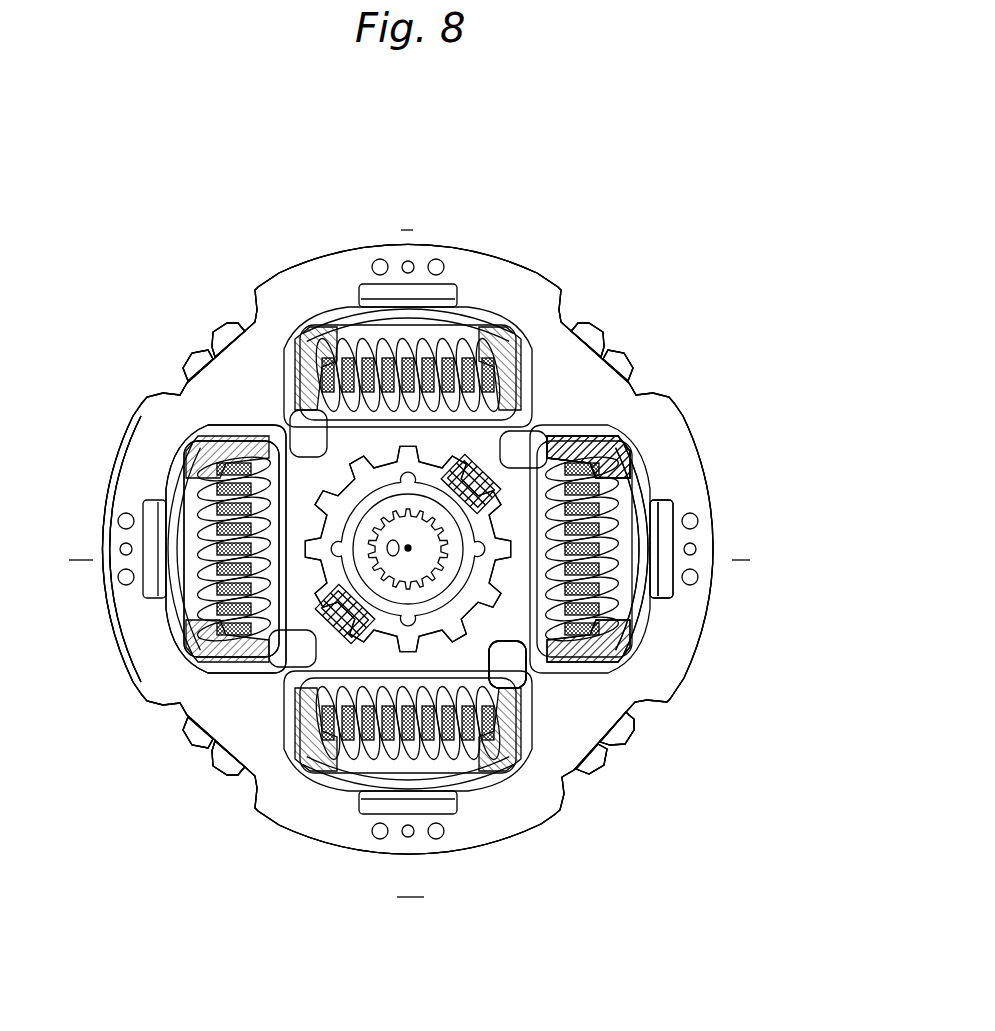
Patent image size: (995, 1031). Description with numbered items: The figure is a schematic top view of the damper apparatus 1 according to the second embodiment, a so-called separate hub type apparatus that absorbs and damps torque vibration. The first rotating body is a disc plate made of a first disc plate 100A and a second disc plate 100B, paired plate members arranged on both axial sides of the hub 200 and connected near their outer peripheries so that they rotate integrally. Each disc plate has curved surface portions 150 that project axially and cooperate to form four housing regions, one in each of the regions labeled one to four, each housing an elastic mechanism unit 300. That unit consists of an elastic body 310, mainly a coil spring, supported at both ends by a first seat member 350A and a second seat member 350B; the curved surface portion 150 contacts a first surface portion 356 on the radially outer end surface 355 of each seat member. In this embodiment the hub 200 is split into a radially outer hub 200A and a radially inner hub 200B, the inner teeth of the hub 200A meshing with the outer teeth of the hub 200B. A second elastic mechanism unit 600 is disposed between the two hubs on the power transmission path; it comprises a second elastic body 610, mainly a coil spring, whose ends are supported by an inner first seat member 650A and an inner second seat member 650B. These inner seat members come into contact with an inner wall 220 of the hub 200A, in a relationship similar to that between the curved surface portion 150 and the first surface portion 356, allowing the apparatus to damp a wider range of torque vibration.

The damper apparatus 1 is at (660, 228).
The first disc plate 100A is at (672, 398).
The second disc plate 100B is at (407, 549).
The curved surface portion 150 is at (192, 477).
The hub 200 is at (407, 548).
The hub (radially outer hub) 200A is at (630, 727).
The hub (radially inner hub) 200B is at (470, 613).
The inner wall 220 is at (310, 636).
The elastic mechanism unit 300 is at (630, 592).
The elastic body 310 is at (625, 519).
The first seat member 350A is at (640, 464).
The second seat member 350B is at (643, 637).
The radially outer end surface 355 is at (588, 457).
The first surface portion 356 is at (622, 446).
The second elastic mechanism unit 600 is at (486, 470).
The second elastic body 610 is at (318, 640).
The inner first seat member 650A is at (282, 700).
The inner second seat member 650B is at (325, 606).